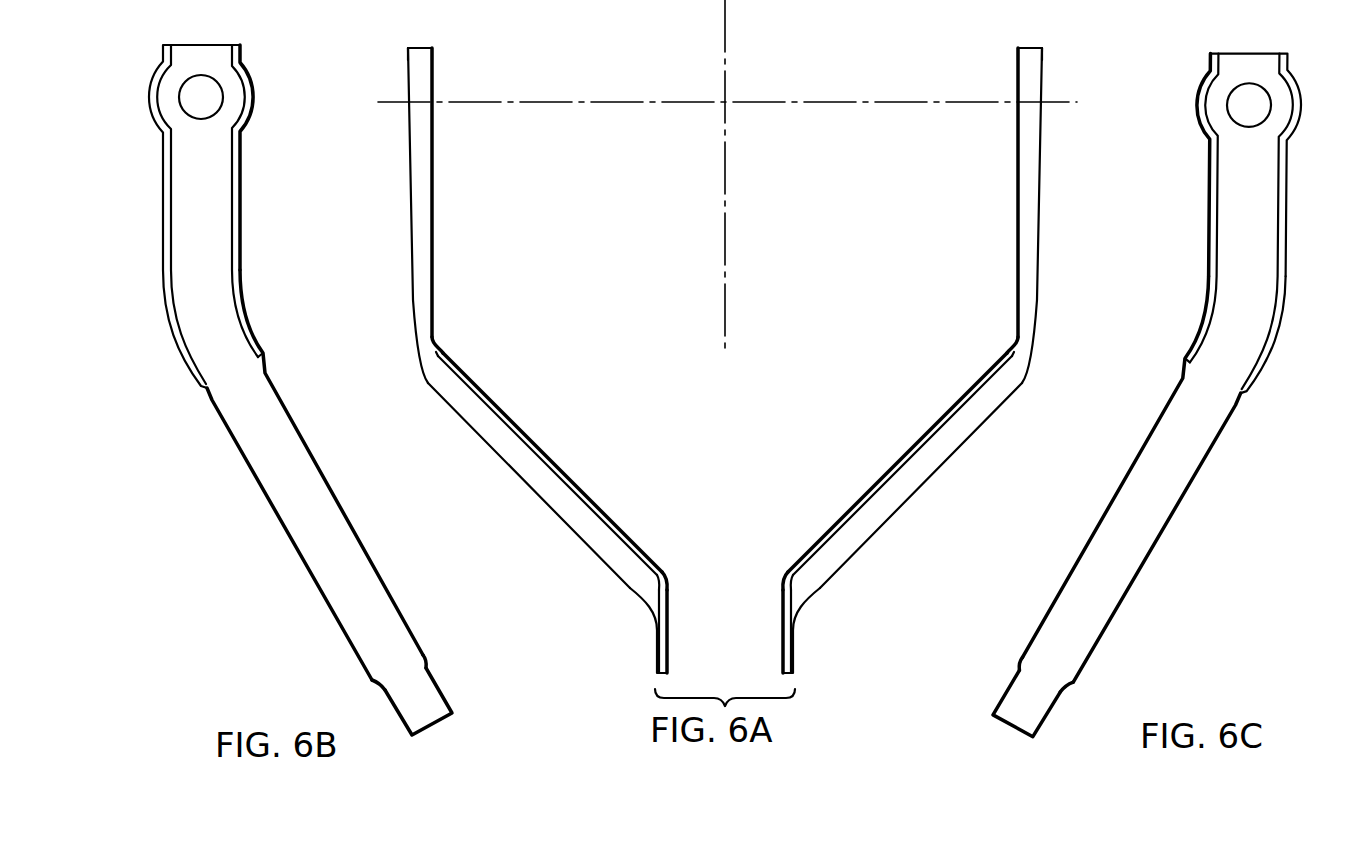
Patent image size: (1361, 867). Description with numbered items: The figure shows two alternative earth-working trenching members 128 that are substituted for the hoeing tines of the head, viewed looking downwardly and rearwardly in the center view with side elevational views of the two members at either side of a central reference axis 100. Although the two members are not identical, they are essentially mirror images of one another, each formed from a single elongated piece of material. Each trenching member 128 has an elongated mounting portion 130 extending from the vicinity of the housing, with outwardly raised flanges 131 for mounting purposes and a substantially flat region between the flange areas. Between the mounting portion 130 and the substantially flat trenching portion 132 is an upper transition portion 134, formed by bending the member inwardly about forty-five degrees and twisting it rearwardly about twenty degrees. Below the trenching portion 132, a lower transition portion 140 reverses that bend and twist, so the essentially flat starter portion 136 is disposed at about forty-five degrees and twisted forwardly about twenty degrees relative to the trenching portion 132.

In FIG. 6A, the reference axis of the support spring 100 is at (787, 101).
In FIG. 6A, the earth-working member 128 is at (418, 52).
In FIG. 6A, the elongated mounting portion 130 is at (432, 196).
In FIG. 6B, the elongated mounting portion 130 is at (220, 218).
In FIG. 6C, the elongated mounting portion 130 is at (1247, 190).
In FIG. 6A, the outwardly raised flanges 131 is at (410, 226).
In FIG. 6B, the outwardly raised flanges 131 is at (163, 197).
In FIG. 6C, the outwardly raised flanges 131 is at (1286, 212).
In FIG. 6A, the trenching portion 132 is at (575, 478).
In FIG. 6B, the trenching portion 132 is at (257, 484).
In FIG. 6C, the trenching portion 132 is at (1162, 522).
In FIG. 6A, the upper transition portion 134 is at (433, 335).
In FIG. 6A, the starter portion 136 is at (657, 655).
In FIG. 6B, the starter portion 136 is at (447, 712).
In FIG. 6C, the starter portion 136 is at (1007, 702).
In FIG. 6A, the lower transition portion 140 is at (663, 588).
In FIG. 6B, the lower transition portion 140 is at (423, 655).
In FIG. 6C, the lower transition portion 140 is at (1018, 662).